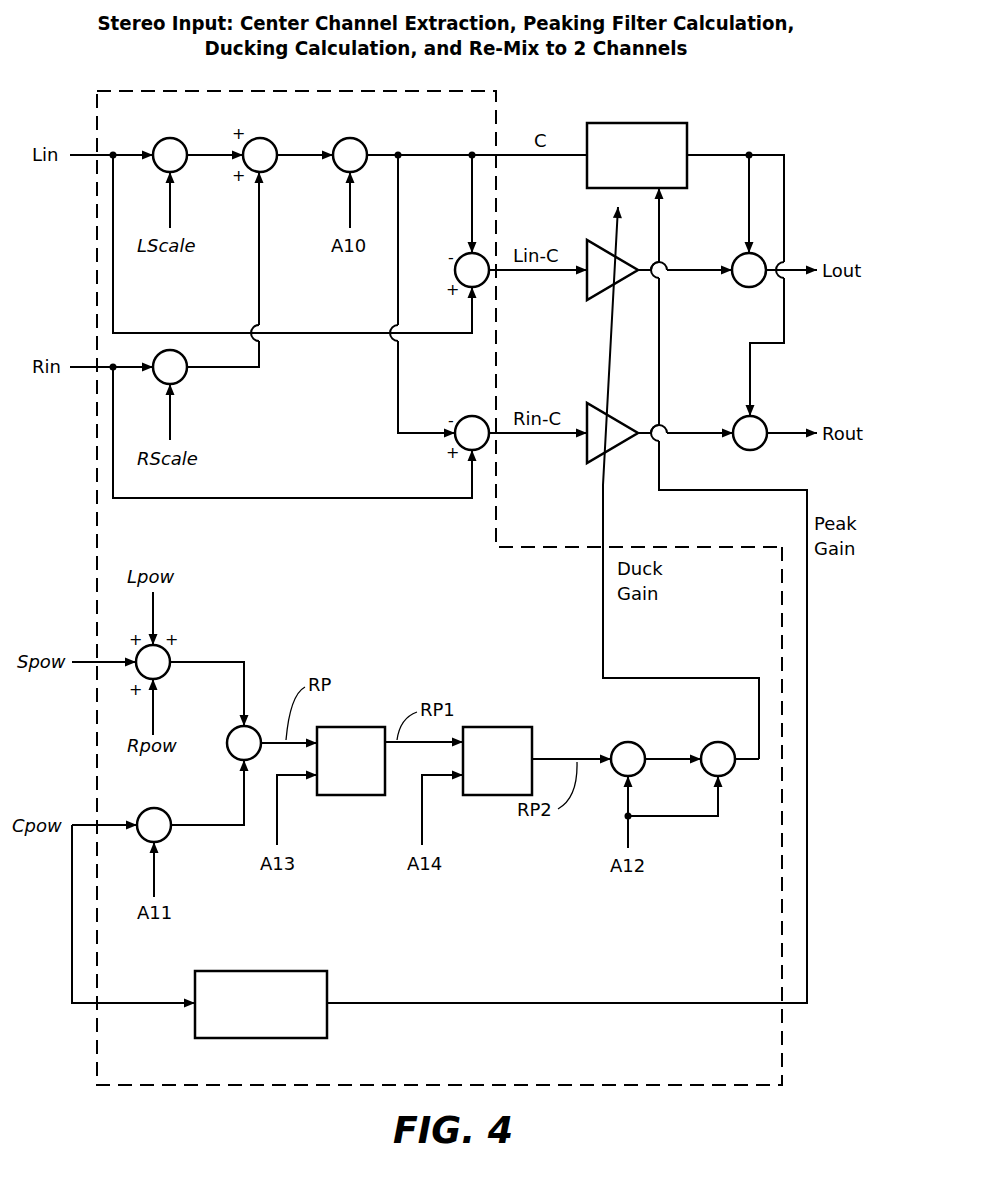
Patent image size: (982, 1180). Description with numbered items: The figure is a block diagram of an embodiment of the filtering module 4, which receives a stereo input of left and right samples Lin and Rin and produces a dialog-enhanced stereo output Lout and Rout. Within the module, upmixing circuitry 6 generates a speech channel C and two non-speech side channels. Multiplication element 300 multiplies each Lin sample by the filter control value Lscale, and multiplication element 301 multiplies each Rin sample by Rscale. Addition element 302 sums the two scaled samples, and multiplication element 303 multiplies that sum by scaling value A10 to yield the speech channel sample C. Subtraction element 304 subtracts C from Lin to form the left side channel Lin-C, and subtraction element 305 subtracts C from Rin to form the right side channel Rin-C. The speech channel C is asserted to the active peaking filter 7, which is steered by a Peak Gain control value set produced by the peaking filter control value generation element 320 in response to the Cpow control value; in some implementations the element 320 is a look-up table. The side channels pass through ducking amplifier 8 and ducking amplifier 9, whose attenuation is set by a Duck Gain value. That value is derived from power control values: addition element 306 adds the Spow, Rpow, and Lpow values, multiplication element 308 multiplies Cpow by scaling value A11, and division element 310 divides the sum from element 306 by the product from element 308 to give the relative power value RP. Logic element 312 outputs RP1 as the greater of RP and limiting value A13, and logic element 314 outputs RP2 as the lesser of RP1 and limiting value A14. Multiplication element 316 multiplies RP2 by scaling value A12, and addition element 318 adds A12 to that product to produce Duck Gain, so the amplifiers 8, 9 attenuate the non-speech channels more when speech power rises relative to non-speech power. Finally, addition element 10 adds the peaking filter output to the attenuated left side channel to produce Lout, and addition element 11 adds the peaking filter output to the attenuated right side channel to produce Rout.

The filtering module 4 is at (80, 528).
The upmixing circuitry 6 is at (498, 132).
The active peaking filter 7 is at (621, 123).
The ducking amplifier 8 is at (584, 246).
The ducking amplifier 9 is at (584, 409).
The addition element 10 is at (740, 255).
The addition element 11 is at (740, 418).
The multiplication element 300 is at (176, 138).
The multiplication element 301 is at (182, 382).
The addition element 302 is at (266, 138).
The multiplication element 303 is at (356, 138).
The subtraction element 304 is at (462, 255).
The subtraction element 305 is at (462, 418).
The addition element 306 is at (167, 650).
The multiplication element 308 is at (156, 808).
The division element 310 is at (233, 729).
The logic element 312 is at (334, 727).
The logic element 314 is at (479, 727).
The multiplication element 316 is at (620, 742).
The addition element 318 is at (710, 742).
The peaking filter control value generation element 320 is at (245, 971).